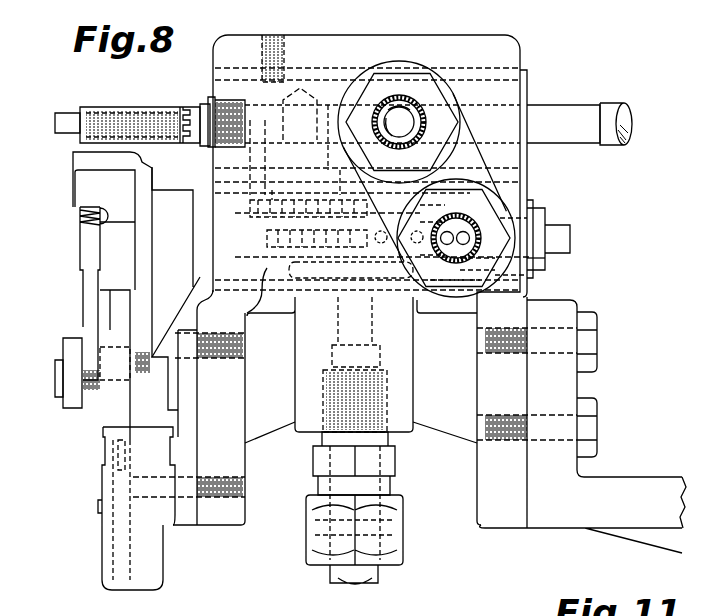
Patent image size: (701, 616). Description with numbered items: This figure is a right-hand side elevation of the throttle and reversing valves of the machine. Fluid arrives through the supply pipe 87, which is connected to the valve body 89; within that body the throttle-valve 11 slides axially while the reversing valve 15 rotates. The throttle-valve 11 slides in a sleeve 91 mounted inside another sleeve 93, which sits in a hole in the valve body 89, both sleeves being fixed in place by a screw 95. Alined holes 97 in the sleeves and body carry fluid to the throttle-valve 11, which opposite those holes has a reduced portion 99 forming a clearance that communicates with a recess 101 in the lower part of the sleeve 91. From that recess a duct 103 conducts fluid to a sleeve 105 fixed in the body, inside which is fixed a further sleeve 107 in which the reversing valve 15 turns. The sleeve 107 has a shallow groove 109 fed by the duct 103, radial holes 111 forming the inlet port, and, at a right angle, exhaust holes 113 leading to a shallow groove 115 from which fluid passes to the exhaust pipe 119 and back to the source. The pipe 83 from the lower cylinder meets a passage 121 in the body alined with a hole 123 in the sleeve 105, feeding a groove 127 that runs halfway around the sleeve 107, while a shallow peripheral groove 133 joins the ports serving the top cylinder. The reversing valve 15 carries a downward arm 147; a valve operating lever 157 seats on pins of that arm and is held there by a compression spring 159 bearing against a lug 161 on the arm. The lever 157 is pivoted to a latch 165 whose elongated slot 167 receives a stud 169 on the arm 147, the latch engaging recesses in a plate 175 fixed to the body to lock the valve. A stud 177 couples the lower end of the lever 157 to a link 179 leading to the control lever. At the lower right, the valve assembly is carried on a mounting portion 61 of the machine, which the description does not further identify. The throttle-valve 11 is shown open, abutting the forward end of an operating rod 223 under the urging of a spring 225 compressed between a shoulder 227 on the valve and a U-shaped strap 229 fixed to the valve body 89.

The throttle-valve 11 is at (573, 108).
The reversing valve 15 is at (562, 240).
The mounting bracket 61 is at (635, 483).
The pipe 83 is at (355, 570).
The supply pipe 87 is at (402, 118).
The valve body 89 is at (480, 46).
The sleeve 91 is at (528, 86).
The sleeve 93 is at (525, 90).
The screw 95 is at (280, 50).
The holes 97 is at (392, 106).
The reduced portion 99 is at (333, 110).
The recess 101 is at (290, 140).
The duct 103 is at (340, 180).
The sleeve 105 is at (527, 192).
The sleeve 107 is at (527, 206).
The shallow groove 109 is at (272, 195).
The holes 111 is at (275, 222).
The holes 113 is at (527, 258).
The shallow groove 115 is at (520, 220).
The exhaust pipe 119 is at (462, 232).
The passage 121 is at (340, 318).
The hole 123 is at (336, 295).
The groove 127 is at (520, 276).
The shallow peripheral groove 133 is at (262, 270).
The arm 147 is at (140, 310).
The valve operating lever 157 is at (85, 290).
The compression spring 159 is at (80, 216).
The lug 161 is at (80, 182).
The latch 165 is at (118, 322).
The elongated slot 167 is at (123, 350).
The stud 169 is at (110, 382).
The plate 175 is at (118, 412).
The stud 177 is at (55, 371).
The link 179 is at (70, 405).
The operating rod 223 is at (620, 103).
The spring 225 is at (135, 115).
The shoulder 227 is at (176, 106).
The U-shaped strap 229 is at (82, 108).